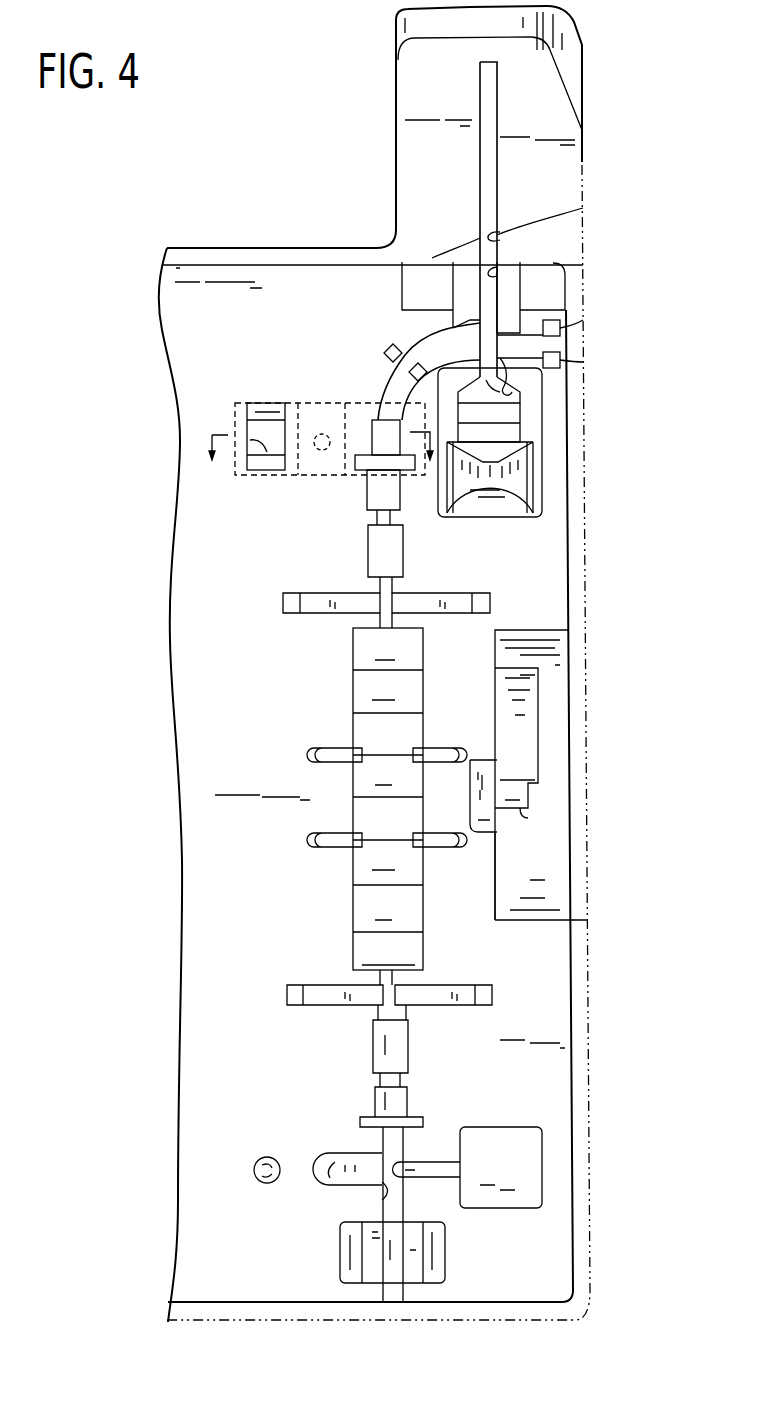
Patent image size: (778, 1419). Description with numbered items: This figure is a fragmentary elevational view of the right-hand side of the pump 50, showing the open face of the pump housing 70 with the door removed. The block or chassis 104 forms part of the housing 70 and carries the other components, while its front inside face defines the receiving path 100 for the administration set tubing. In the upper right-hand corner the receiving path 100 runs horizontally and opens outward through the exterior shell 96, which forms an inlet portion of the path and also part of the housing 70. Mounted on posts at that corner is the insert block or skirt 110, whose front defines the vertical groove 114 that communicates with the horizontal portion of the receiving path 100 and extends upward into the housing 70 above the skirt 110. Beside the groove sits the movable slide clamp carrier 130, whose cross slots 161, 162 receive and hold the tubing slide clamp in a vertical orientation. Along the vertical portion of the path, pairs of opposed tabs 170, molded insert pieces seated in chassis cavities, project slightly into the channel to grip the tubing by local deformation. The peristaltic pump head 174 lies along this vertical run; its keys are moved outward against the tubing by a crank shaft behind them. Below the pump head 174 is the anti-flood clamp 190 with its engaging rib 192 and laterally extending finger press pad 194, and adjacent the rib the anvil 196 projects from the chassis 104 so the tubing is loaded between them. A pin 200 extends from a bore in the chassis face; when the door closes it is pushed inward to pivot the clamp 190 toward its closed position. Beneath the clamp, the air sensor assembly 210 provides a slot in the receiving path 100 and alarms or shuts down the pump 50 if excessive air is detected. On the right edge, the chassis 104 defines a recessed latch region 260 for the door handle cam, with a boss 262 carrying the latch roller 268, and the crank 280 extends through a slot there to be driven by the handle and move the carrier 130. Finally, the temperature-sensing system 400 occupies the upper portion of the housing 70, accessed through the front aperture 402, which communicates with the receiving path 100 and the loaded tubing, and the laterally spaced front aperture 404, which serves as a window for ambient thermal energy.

The pump 50 is at (180, 185).
The pump housing 70 is at (390, 38).
The exterior shell 96 is at (302, 248).
The receiving path 100 is at (432, 342).
The chassis 104 is at (178, 866).
The skirt 110 is at (572, 300).
The vertical groove 114 is at (497, 267).
The slide clamp carrier 130 is at (552, 488).
The cross slot 161 is at (460, 407).
The cross slot 162 is at (512, 398).
The tabs 170 is at (386, 352).
The peristaltic pump head 174 is at (345, 686).
The anti-flood clamp 190 is at (560, 1168).
The engaging rib 192 is at (413, 1167).
The finger press pad 194 is at (518, 1137).
The anvil 196 is at (385, 1196).
The pin 200 is at (272, 1158).
The air sensor assembly 210 is at (365, 1290).
The recessed latch region 260 is at (550, 888).
The boss 262 is at (478, 842).
The latch roller 268 is at (525, 818).
The crank 280 is at (525, 697).
The temperature-sensing system 400 is at (230, 408).
The front aperture 402 is at (372, 423).
The front aperture 404 is at (265, 447).